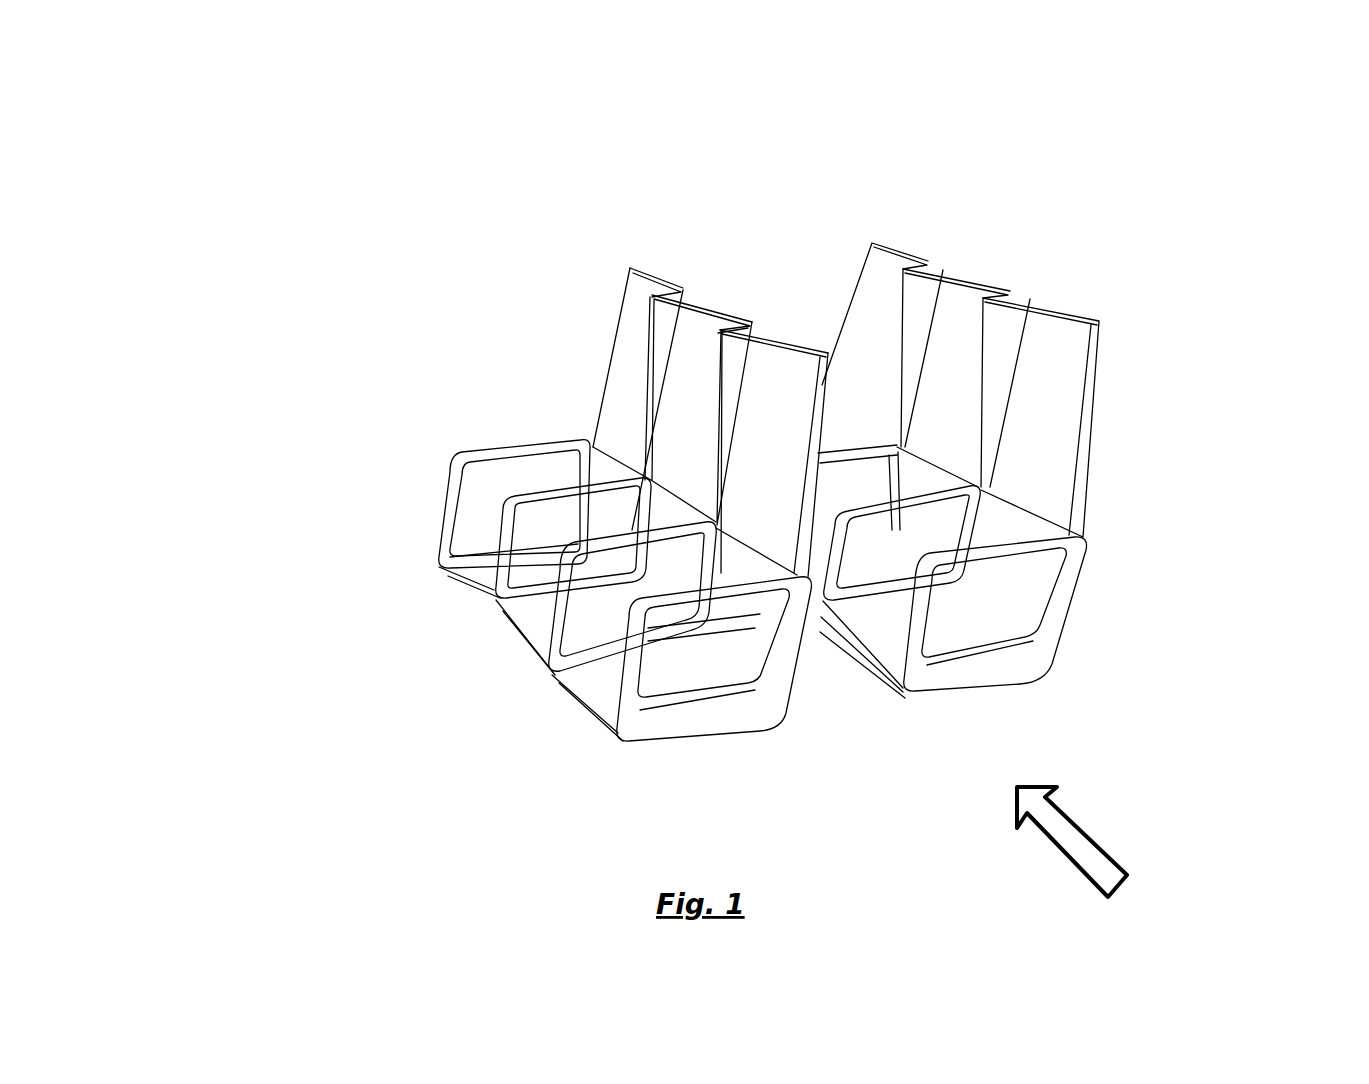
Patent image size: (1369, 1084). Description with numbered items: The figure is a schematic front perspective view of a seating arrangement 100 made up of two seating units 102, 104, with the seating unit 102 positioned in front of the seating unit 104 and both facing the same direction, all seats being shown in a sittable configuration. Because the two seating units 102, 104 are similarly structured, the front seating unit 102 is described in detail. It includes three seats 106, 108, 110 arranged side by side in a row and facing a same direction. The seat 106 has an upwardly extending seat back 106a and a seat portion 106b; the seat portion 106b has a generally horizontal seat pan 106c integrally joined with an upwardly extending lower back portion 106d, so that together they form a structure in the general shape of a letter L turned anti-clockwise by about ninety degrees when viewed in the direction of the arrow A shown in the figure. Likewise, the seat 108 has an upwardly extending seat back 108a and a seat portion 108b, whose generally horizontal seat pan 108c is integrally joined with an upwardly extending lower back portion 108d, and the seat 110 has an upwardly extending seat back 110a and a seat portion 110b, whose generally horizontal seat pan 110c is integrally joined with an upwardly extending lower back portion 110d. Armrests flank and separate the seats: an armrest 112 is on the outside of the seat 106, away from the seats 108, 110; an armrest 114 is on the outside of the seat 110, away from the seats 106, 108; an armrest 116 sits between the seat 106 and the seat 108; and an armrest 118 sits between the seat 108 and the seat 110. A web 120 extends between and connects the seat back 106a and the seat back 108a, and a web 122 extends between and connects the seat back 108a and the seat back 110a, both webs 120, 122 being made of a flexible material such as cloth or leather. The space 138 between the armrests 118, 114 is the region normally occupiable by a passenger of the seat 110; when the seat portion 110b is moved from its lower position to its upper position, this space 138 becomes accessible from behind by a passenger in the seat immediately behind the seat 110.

The seating arrangement 100 is at (1163, 708).
The seating unit 102 is at (597, 397).
The seating unit 104 is at (1100, 372).
The seat 106 is at (638, 288).
The seat back 106a is at (640, 327).
The seat portion 106b is at (480, 550).
The seat pan 106c is at (470, 573).
The lower back portion 106d is at (597, 473).
The seat 108 is at (718, 322).
The seat back 108a is at (702, 320).
The seat portion 108b is at (543, 598).
The seat pan 108c is at (508, 608).
The lower back portion 108d is at (665, 522).
The seat 110 is at (777, 363).
The seat back 110a is at (803, 377).
The seat portion 110b is at (650, 680).
The seat pan 110c is at (605, 650).
The lower back portion 110d is at (763, 623).
The armrest 112 is at (492, 458).
The armrest 114 is at (700, 598).
The armrest 116 is at (650, 480).
The armrest 118 is at (617, 548).
The web 120 is at (668, 342).
The web 122 is at (733, 340).
The space 138 is at (668, 647).